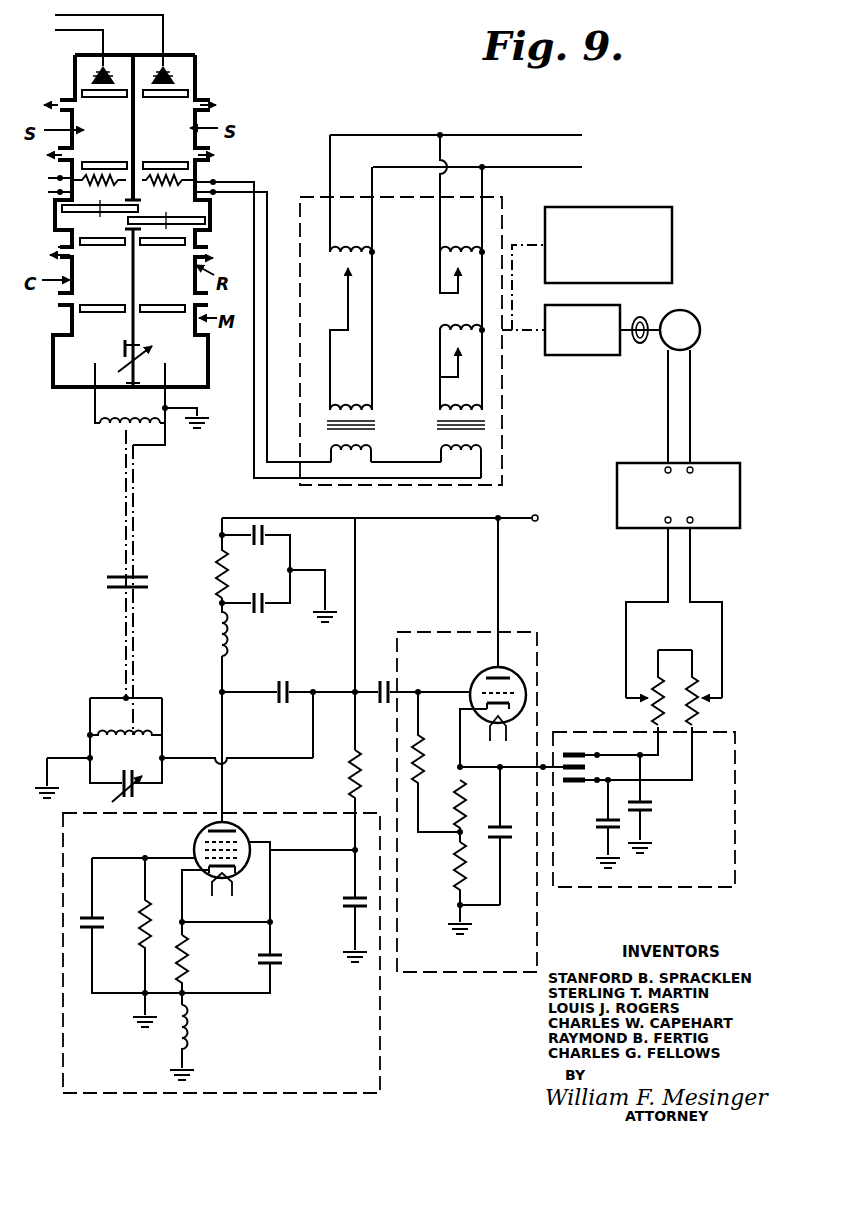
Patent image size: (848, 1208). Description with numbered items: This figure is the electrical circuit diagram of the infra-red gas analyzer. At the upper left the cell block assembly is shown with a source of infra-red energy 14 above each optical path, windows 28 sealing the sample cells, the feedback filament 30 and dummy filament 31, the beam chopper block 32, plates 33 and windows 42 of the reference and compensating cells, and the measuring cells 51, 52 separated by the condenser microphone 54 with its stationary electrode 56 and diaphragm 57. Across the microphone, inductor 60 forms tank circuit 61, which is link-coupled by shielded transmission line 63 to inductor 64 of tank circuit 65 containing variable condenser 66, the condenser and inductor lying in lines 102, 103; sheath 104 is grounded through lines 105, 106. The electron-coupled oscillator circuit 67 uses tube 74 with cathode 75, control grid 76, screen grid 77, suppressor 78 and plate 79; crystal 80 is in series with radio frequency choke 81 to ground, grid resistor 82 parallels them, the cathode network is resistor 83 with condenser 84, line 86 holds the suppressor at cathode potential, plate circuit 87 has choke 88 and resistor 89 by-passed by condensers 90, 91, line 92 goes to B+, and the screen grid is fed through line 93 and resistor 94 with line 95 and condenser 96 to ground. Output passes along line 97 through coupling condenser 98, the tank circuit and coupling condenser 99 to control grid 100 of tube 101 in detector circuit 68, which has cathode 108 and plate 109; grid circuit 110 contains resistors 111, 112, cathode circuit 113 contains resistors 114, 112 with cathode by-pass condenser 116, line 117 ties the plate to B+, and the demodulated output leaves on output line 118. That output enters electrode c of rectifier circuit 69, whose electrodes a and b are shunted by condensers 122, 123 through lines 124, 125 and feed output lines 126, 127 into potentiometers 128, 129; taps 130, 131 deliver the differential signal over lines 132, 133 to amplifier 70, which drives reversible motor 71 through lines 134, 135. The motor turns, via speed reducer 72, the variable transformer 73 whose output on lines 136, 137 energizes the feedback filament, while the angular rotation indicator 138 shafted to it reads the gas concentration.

The source of infra-red energy 14 is at (94, 75).
The end glasses or windows 28 is at (105, 97).
The feedback filament 30 is at (186, 182).
The dummy filament 31 is at (80, 181).
The beam chopper block 32 is at (60, 242).
The aperture plates 33 is at (64, 210).
The end glasses or windows 42 is at (102, 246).
The measuring cell 51 is at (80, 343).
The measuring cell 52 is at (205, 354).
The condenser microphone 54 is at (108, 356).
The stationary electrode 56 is at (122, 346).
The metal diaphragm 57 is at (152, 351).
The inductor 60 is at (118, 430).
The tank circuit 61 is at (92, 412).
The shielded transmission line 63 is at (122, 602).
The inductor 64 is at (140, 733).
The tank circuit 65 is at (88, 752).
The variable condenser 66 is at (138, 788).
The electron-coupled oscillator circuit 67 is at (62, 1018).
The detector circuit 68 is at (463, 972).
The rectifier circuit 69 is at (670, 878).
The amplifier 70 is at (742, 498).
The reversible motor 71 is at (701, 330).
The speed reducer 72 is at (558, 347).
The variable transformer 73 is at (504, 422).
The multi-element electronic tube 74 is at (216, 821).
The cathode 75 is at (236, 870).
The control grid 76 is at (256, 868).
The screen grid 77 is at (200, 850).
The suppressor 78 is at (202, 836).
The plate 79 is at (230, 830).
The crystal 80 is at (78, 921).
The radio frequency choke 81 is at (190, 1026).
The grid resistor 82 is at (140, 942).
The resistor 83 is at (190, 960).
The condenser 84 is at (257, 961).
The line 86 is at (272, 896).
The plate circuit 87 is at (220, 730).
The radio frequency choke 88 is at (216, 643).
The resistor 89 is at (215, 573).
The condenser 90 is at (258, 547).
The condenser 91 is at (258, 616).
The line 92 is at (290, 517).
The line 93 is at (360, 570).
The resistor 94 is at (352, 789).
The line 95 is at (352, 877).
The condenser 96 is at (342, 906).
The line 97 is at (255, 696).
The coupling condenser 98 is at (286, 680).
The coupling condenser 99 is at (384, 680).
The control grid 100 is at (512, 692).
The electron tube 101 is at (471, 670).
The line 102 is at (90, 776).
The line 103 is at (165, 752).
The sheath 104 is at (125, 518).
The line 105 is at (152, 446).
The line 106 is at (108, 697).
The cathode 108 is at (512, 703).
The plate 109 is at (508, 676).
The grid circuit 110 is at (456, 833).
The resistor 111 is at (416, 741).
The resistor 112 is at (456, 880).
The cathode circuit 113 is at (460, 737).
The resistor 114 is at (460, 790).
The cathode by-pass condenser 116 is at (504, 840).
The line 117 is at (500, 566).
The output line 118 is at (524, 768).
The condenser 122 is at (600, 838).
The condenser 123 is at (654, 811).
The line 124 is at (600, 802).
The line 125 is at (650, 795).
The output line 126 is at (702, 755).
The output line 127 is at (656, 751).
The potentiometer 128 is at (655, 690).
The potentiometer 129 is at (696, 690).
The variable tap 130 is at (642, 700).
The variable tap 131 is at (708, 701).
The line 132 is at (666, 576).
The line 133 is at (692, 562).
The line 134 is at (666, 418).
The line 135 is at (692, 410).
The line 136 is at (243, 196).
The line 137 is at (256, 180).
The angular rotation indicator 138 is at (674, 232).